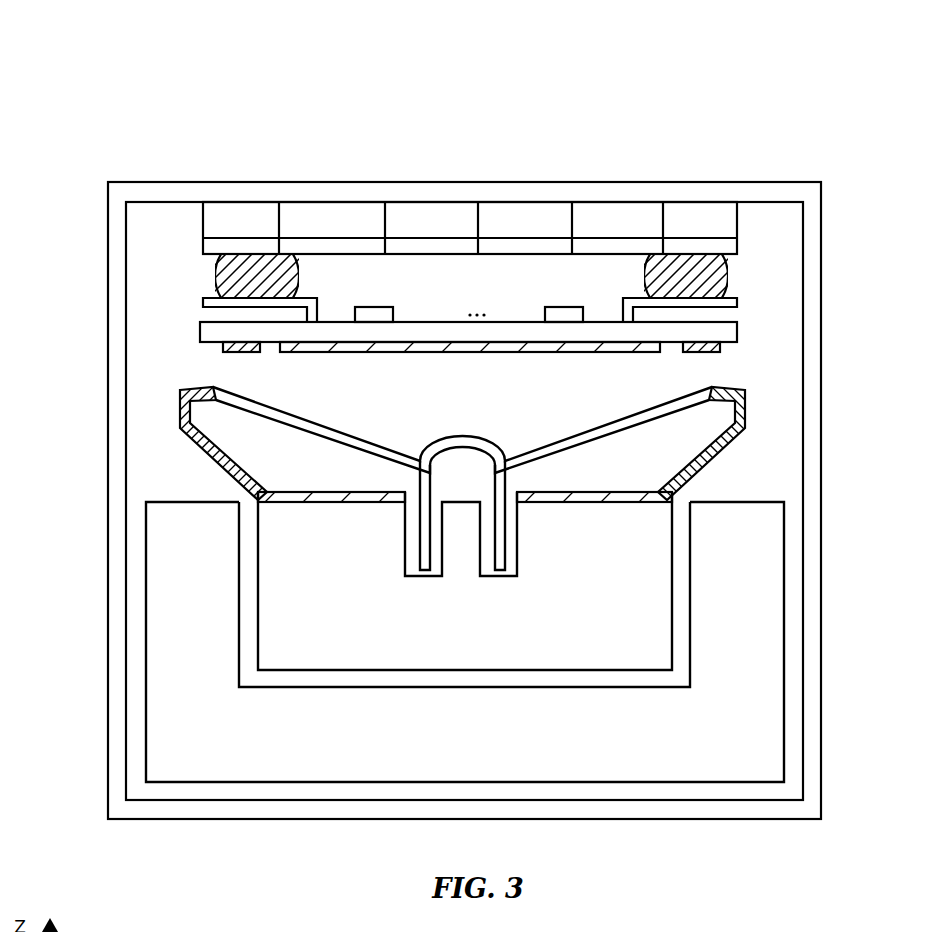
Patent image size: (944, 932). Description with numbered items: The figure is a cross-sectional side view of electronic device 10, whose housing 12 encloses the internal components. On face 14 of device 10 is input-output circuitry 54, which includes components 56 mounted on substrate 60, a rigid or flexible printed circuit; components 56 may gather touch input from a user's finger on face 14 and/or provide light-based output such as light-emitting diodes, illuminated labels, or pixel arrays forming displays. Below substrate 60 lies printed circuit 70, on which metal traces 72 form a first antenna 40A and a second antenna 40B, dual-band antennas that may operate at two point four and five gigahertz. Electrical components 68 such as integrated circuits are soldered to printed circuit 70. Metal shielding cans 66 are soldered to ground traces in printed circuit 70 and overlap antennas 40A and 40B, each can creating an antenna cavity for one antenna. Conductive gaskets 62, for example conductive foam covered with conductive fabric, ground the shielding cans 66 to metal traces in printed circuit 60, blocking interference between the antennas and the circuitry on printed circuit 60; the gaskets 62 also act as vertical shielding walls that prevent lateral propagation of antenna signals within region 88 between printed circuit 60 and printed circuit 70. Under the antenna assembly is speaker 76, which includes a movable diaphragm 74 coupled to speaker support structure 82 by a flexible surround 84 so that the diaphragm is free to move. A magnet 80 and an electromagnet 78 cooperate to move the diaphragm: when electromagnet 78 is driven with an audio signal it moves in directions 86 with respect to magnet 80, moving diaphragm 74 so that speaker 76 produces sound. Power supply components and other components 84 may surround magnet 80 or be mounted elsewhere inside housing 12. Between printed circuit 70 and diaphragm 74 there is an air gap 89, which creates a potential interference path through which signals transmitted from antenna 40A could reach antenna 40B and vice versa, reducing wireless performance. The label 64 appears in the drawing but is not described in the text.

The electronic device 10 is at (803, 58).
The housing 12 is at (810, 354).
The face 14 is at (632, 137).
The first antenna 40A is at (206, 371).
The second antenna 40B is at (727, 367).
The input-output circuitry 54 is at (196, 203).
The components 56 is at (252, 208).
The substrate 60 is at (500, 255).
The conductive gaskets 62 is at (212, 264).
The printed circuit substrate layers 64 is at (197, 305).
The metal shielding cans 66 is at (318, 302).
The electrical components 68 is at (392, 314).
The printed circuit 70 is at (416, 352).
The metal traces 72 is at (240, 353).
The diaphragm 74 is at (218, 378).
The speaker 76 is at (755, 670).
The electromagnet 78 is at (424, 568).
The magnet 80 is at (428, 656).
The speaker support structure 82 is at (231, 460).
The surround 84 is at (193, 738).
The directions 86 is at (466, 433).
The region 88 is at (528, 268).
The air gap 89 is at (512, 364).